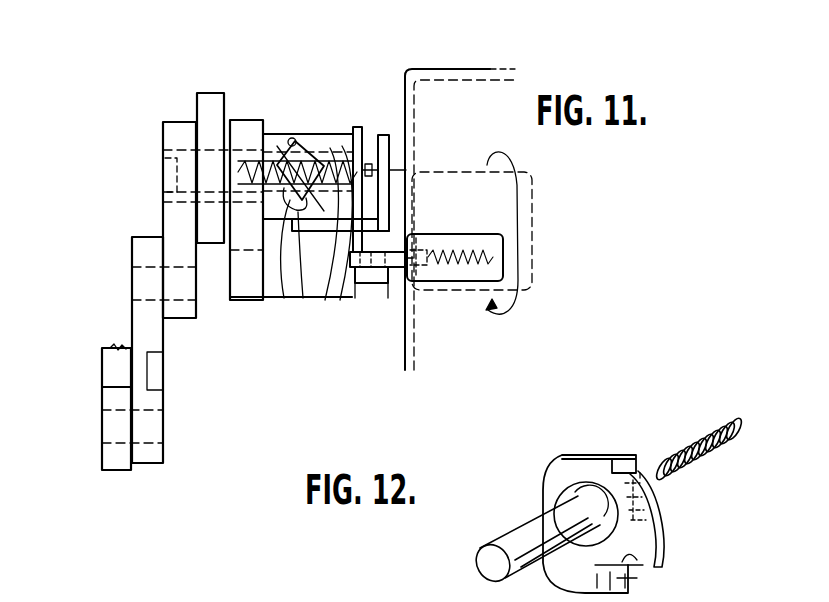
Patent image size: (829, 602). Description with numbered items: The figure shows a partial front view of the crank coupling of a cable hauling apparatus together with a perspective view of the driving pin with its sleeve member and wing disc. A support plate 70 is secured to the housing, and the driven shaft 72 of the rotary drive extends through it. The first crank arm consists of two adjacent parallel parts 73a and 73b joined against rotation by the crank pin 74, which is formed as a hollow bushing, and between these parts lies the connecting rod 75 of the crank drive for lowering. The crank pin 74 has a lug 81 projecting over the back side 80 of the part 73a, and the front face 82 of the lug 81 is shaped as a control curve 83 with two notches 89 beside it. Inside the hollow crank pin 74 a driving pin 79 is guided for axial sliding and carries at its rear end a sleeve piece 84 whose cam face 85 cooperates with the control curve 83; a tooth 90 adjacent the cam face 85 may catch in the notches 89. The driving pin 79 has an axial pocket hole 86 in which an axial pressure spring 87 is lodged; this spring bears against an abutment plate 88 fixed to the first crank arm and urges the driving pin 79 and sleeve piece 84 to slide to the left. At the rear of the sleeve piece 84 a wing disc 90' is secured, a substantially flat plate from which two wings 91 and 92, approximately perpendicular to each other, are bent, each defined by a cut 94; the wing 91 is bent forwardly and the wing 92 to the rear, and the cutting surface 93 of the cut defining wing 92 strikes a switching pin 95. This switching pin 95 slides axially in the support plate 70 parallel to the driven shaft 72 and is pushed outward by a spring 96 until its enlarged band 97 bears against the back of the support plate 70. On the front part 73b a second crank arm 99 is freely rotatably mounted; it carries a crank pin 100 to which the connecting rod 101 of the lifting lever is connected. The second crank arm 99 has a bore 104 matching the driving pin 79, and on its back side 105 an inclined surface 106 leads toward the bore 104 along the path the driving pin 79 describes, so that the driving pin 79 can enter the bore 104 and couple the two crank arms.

In FIG. 11, the support plate 70 is at (448, 82).
In FIG. 11, the driven shaft 72 is at (292, 290).
In FIG. 11, the rearward part of first crank arm 73a is at (245, 288).
In FIG. 11, the forward part of first crank arm 73b is at (178, 128).
In FIG. 11, the crank pin 74 is at (236, 150).
In FIG. 11, the connecting rod 75 is at (212, 98).
In FIG. 11, the driving pin 79 is at (182, 174).
In FIG. 12, the driving pin 79 is at (512, 573).
In FIG. 11, the back side of part 73a 80 is at (285, 298).
In FIG. 11, the lug 81 is at (285, 212).
In FIG. 11, the front face of lug 82 is at (292, 298).
In FIG. 11, the control curve 83 is at (294, 140).
In FIG. 11, the sleeve piece 84 is at (306, 134).
In FIG. 12, the sleeve piece 84 is at (575, 500).
In FIG. 11, the cam face 85 is at (345, 299).
In FIG. 11, the pocket hole 86 is at (250, 160).
In FIG. 12, the pocket hole 86 is at (538, 522).
In FIG. 11, the axial pressure spring 87 is at (366, 168).
In FIG. 12, the axial pressure spring 87 is at (698, 446).
In FIG. 11, the abutment plate 88 is at (385, 148).
In FIG. 11, the notches 89 is at (330, 243).
In FIG. 11, the tooth 90 is at (368, 304).
In FIG. 11, the wing disc 90' is at (409, 174).
In FIG. 12, the wing disc 90' is at (589, 507).
In FIG. 11, the wing 91 is at (354, 130).
In FIG. 12, the wing 91 is at (652, 496).
In FIG. 11, the wing 92 is at (395, 283).
In FIG. 12, the wing 92 is at (630, 582).
In FIG. 11, the cutting surface 93 is at (388, 228).
In FIG. 12, the cutting surface 93 is at (660, 560).
In FIG. 12, the cut 94 is at (620, 470).
In FIG. 11, the switching pin 95 is at (415, 295).
In FIG. 11, the spring 96 is at (462, 240).
In FIG. 11, the enlarged band 97 is at (420, 283).
In FIG. 11, the second crank arm 99 is at (150, 450).
In FIG. 11, the crank pin 100 is at (128, 412).
In FIG. 11, the connecting rod 101 is at (126, 364).
In FIG. 11, the bore 104 is at (122, 350).
In FIG. 11, the back side of second crank arm 105 is at (165, 398).
In FIG. 11, the inclined surface 106 is at (157, 358).